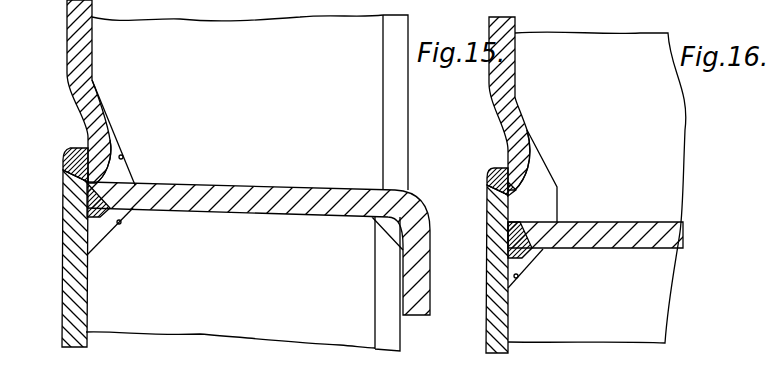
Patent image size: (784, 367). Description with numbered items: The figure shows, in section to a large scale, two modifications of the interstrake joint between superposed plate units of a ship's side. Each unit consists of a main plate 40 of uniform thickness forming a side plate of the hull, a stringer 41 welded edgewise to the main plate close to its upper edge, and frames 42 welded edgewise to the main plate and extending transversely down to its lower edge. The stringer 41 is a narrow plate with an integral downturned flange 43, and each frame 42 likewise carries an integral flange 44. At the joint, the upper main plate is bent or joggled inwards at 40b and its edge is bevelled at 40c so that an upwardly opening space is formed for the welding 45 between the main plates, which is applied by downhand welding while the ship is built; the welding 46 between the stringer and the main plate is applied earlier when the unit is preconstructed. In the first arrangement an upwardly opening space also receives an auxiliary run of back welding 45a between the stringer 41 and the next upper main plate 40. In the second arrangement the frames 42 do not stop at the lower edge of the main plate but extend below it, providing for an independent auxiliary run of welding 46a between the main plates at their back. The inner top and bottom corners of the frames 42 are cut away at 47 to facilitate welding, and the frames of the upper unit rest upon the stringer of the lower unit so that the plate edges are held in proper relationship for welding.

In FIG. 15, the main plate 40 is at (80, 61).
In FIG. 16, the main plate 40 is at (498, 68).
In FIG. 15, the joggle of upper plate 40b is at (110, 150).
In FIG. 16, the joggle of upper plate 40b is at (528, 151).
In FIG. 15, the bevelled upper edge 40c is at (66, 168).
In FIG. 16, the bevelled upper edge 40c is at (489, 187).
In FIG. 15, the stringer 41 is at (269, 200).
In FIG. 16, the stringer 41 is at (643, 230).
In FIG. 15, the frame 42 is at (243, 183).
In FIG. 16, the frame 42 is at (597, 187).
In FIG. 15, the downturned flange 43 is at (418, 297).
In FIG. 15, the flange of frame 44 is at (388, 142).
In FIG. 15, the welding between main plates 45 is at (80, 146).
In FIG. 16, the welding between main plates 45 is at (507, 160).
In FIG. 15, the auxiliary run of back welding 45a is at (89, 182).
In FIG. 15, the welding between stringer and main plate 46 is at (97, 218).
In FIG. 16, the welding between stringer and main plate 46 is at (533, 257).
In FIG. 16, the independent auxiliary run of welding 46a is at (514, 190).
In FIG. 15, the cut-away corner of frame 47 is at (123, 157).
In FIG. 16, the cut-away corner of frame 47 is at (553, 202).